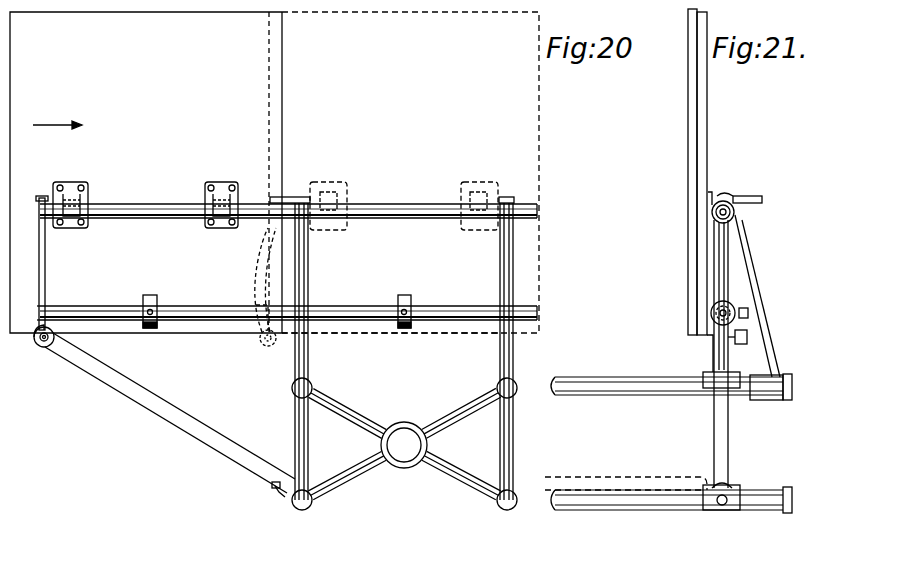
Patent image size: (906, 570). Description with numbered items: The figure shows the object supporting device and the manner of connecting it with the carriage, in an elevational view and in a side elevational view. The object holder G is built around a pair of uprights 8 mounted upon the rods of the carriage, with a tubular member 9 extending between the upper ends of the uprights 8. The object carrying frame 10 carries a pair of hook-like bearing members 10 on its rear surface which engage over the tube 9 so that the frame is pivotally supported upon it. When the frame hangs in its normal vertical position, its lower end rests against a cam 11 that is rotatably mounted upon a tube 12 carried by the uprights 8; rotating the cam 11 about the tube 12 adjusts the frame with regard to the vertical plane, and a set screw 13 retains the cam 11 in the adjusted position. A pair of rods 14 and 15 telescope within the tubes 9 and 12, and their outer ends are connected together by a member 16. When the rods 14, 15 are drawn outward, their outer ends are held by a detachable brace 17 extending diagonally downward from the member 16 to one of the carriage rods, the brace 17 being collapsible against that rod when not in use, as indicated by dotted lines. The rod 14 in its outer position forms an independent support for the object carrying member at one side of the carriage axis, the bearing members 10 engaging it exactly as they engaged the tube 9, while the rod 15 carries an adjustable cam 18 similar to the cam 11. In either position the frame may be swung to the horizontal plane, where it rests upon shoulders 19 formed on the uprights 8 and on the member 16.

In FIG. 20, the object holder G is at (250, 84).
In FIG. 20, the uprights 8 is at (303, 282).
In FIG. 20, the tubular member 9 is at (525, 212).
In FIG. 20, the object carrying frame 10 is at (225, 194).
In FIG. 21, the object carrying frame 10 is at (727, 197).
In FIG. 20, the cam 11 is at (411, 300).
In FIG. 20, the tube 12 is at (525, 313).
In FIG. 20, the set screw 13 is at (394, 330).
In FIG. 20, the rod 14 is at (145, 212).
In FIG. 20, the rod 15 is at (108, 312).
In FIG. 20, the member 16 is at (45, 266).
In FIG. 20, the detachable brace 17 is at (144, 400).
In FIG. 21, the detachable brace 17 is at (601, 490).
In FIG. 20, the adjustable cam 18 is at (152, 326).
In FIG. 20, the shoulders 19 is at (40, 197).
In FIG. 21, the shoulders 19 is at (746, 200).